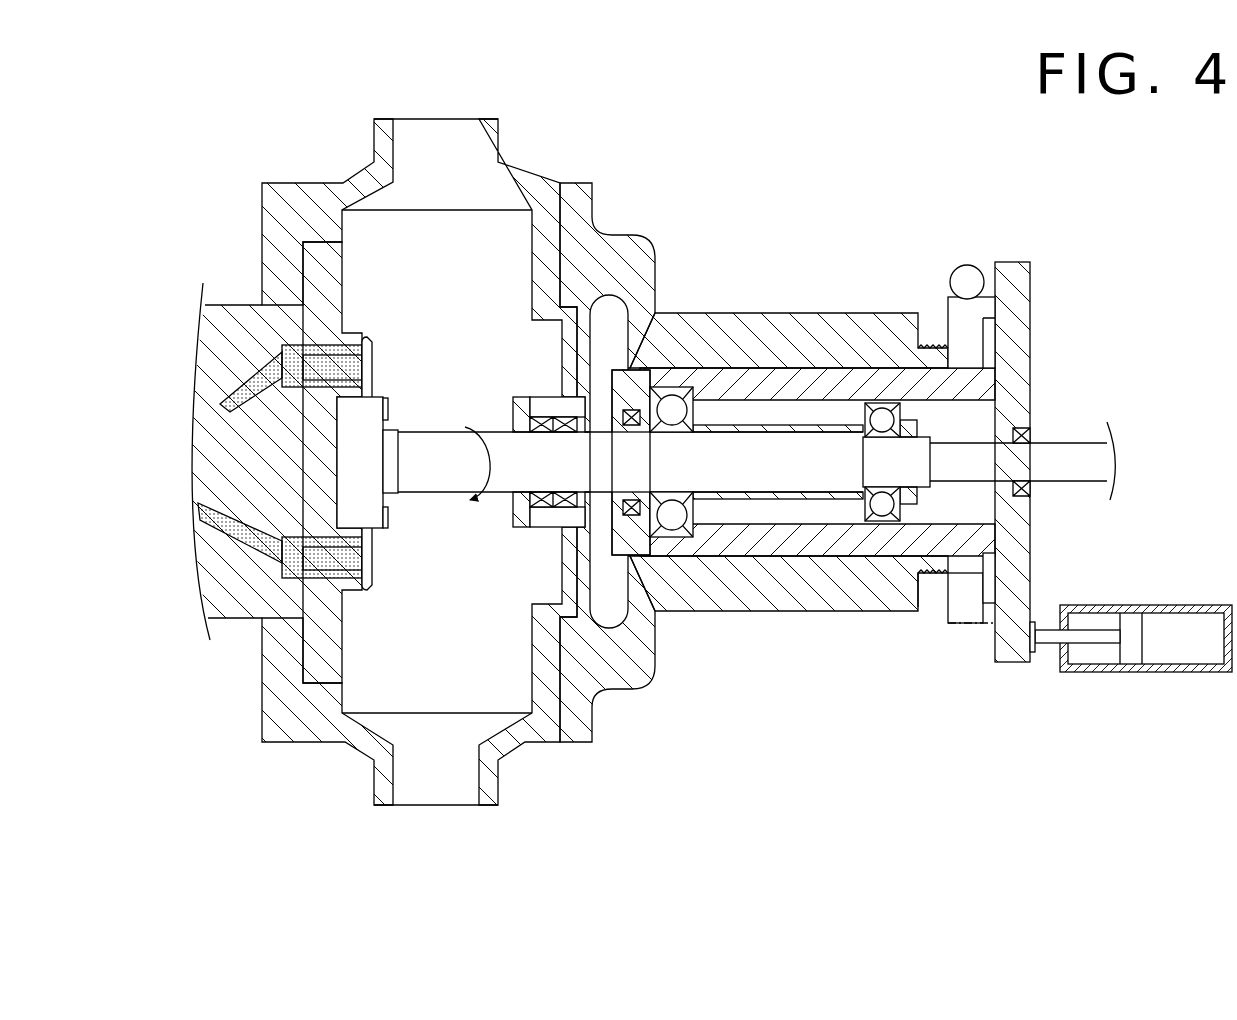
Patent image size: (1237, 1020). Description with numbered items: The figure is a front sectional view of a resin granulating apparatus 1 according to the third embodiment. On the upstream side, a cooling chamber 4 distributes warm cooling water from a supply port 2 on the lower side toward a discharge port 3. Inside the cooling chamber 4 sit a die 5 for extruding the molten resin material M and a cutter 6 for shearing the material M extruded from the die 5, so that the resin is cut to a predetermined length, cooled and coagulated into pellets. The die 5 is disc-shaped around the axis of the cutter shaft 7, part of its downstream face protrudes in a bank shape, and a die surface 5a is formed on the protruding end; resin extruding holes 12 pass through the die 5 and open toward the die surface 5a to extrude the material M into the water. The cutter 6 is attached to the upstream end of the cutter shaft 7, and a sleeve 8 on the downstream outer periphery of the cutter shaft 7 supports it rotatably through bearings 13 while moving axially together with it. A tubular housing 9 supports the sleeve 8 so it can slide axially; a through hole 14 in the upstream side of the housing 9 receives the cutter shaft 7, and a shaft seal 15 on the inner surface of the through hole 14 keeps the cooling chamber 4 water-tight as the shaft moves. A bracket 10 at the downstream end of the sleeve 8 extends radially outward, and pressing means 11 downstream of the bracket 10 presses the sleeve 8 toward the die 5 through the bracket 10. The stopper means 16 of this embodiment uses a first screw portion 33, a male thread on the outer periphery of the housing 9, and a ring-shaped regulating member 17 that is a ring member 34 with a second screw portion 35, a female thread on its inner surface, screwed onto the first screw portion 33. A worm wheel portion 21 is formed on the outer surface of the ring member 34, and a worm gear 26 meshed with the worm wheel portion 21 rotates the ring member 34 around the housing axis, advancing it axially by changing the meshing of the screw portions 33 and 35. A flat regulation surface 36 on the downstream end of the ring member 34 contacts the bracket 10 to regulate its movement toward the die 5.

The resin granulating apparatus 1 is at (763, 212).
The supply port 2 is at (478, 770).
The discharge port 3 is at (480, 150).
The cooling chamber 4 is at (443, 294).
The die 5 is at (330, 652).
The die surface 5a is at (365, 363).
The cutter 6 is at (365, 558).
The cutter shaft 7 is at (503, 440).
The sleeve 8 is at (788, 380).
The housing 9 is at (740, 352).
The bracket 10 is at (1021, 262).
The pressing means 11 is at (1168, 605).
The resin extruding holes 12 is at (363, 387).
The bearings 13 is at (672, 392).
The through hole 14 is at (518, 485).
The shaft seal 15 is at (522, 528).
The stopper means 16 is at (940, 208).
The regulating member 17 is at (988, 312).
The worm wheel portion 21 is at (978, 630).
The worm gear 26 is at (957, 268).
The first screw portion 33 is at (932, 580).
The ring member 34 is at (957, 613).
The second screw portion 35 is at (963, 570).
The regulation surface 36 is at (978, 615).
The molten resin material M is at (220, 398).